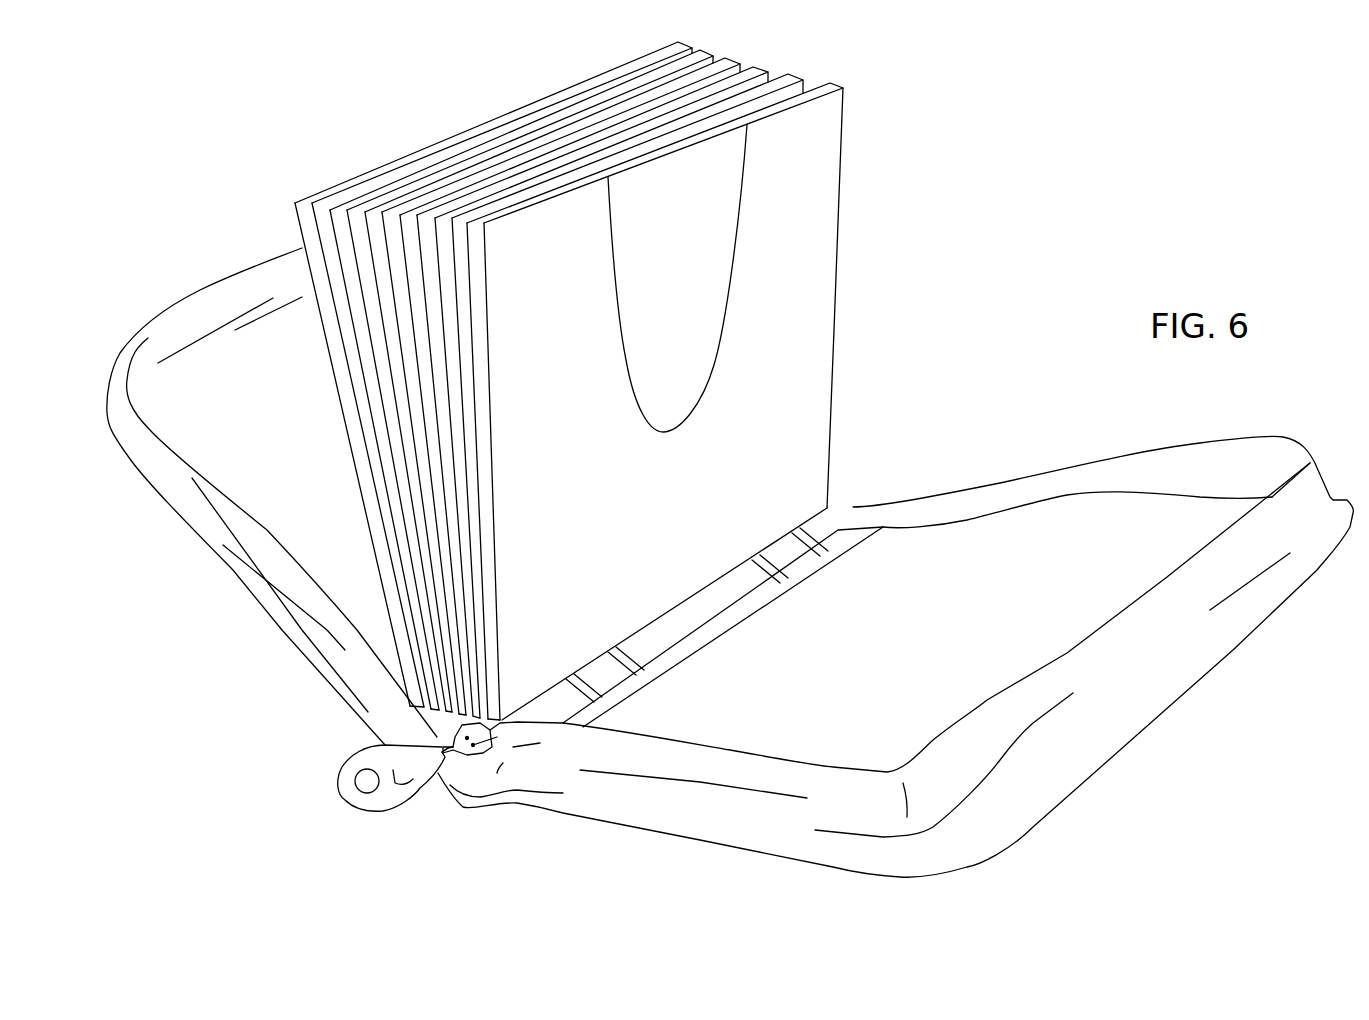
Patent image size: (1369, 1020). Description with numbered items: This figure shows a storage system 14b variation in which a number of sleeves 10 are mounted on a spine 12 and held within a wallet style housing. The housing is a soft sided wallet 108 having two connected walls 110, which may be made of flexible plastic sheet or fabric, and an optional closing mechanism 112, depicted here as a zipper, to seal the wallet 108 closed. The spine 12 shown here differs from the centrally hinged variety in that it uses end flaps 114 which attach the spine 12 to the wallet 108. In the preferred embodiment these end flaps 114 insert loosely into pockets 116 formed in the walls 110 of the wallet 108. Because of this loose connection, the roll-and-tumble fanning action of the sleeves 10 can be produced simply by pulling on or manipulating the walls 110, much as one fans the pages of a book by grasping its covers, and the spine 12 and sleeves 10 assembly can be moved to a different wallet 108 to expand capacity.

The sleeve 10 is at (545, 293).
The spine 12 is at (597, 672).
The storage system 14b is at (1048, 252).
The soft sided wallet 108 is at (1030, 494).
The walls 110 is at (218, 424).
The closing mechanism 112 is at (397, 793).
The end flaps 114 is at (723, 620).
The pockets 116 is at (830, 557).